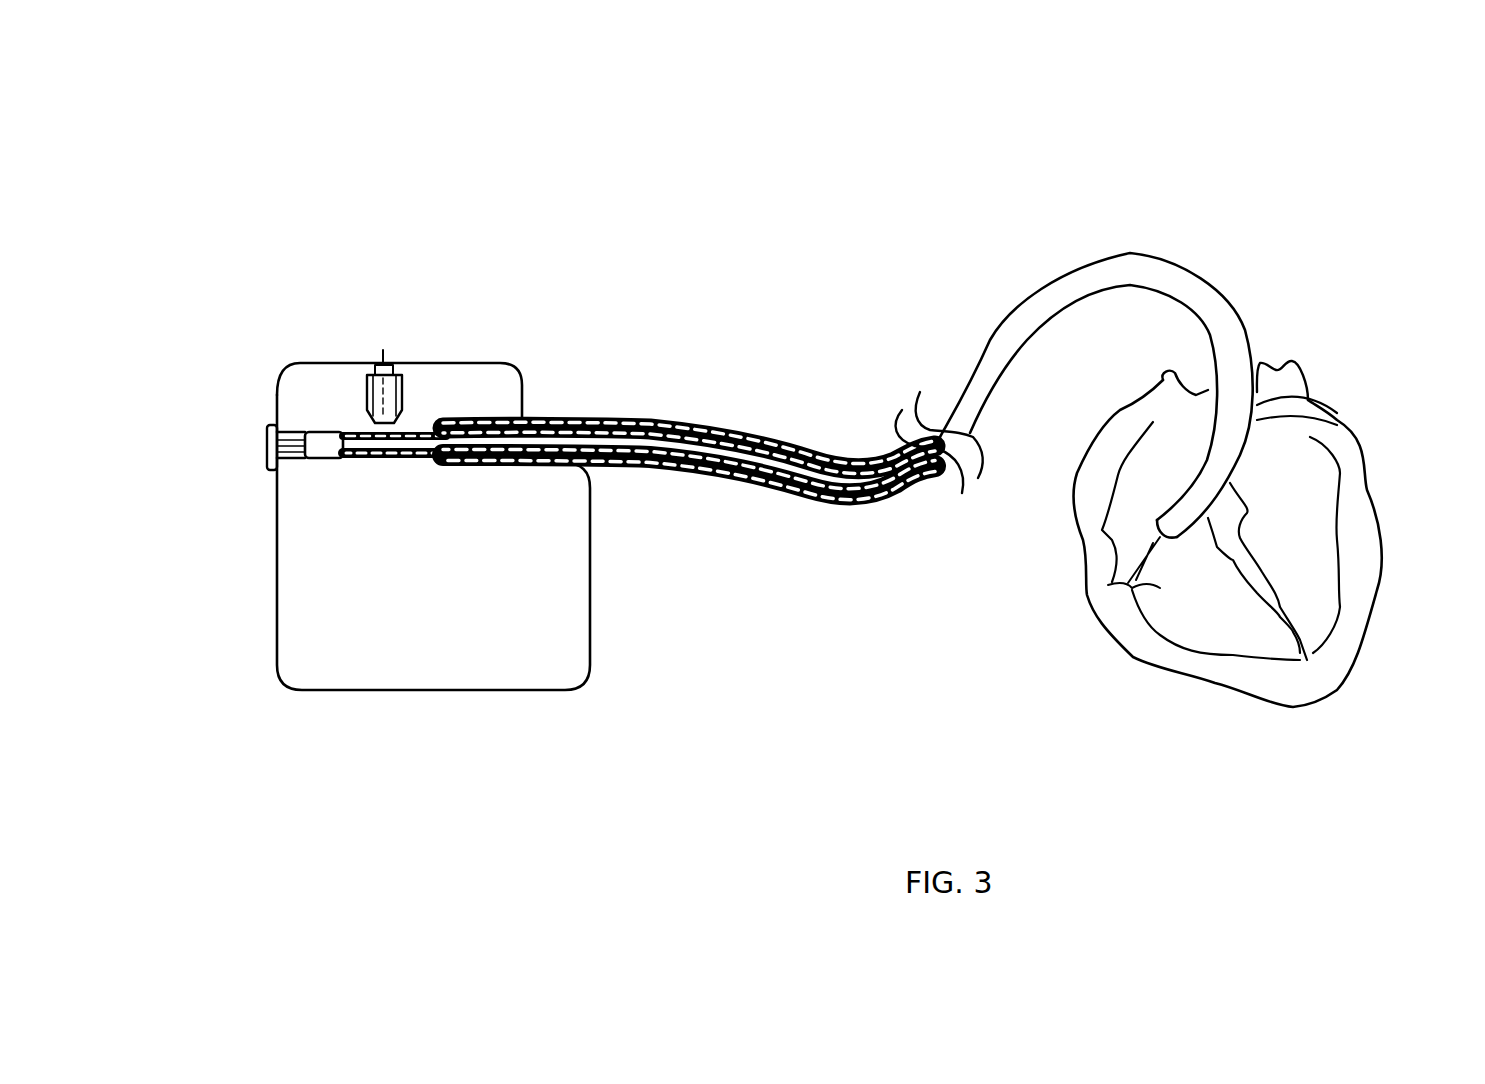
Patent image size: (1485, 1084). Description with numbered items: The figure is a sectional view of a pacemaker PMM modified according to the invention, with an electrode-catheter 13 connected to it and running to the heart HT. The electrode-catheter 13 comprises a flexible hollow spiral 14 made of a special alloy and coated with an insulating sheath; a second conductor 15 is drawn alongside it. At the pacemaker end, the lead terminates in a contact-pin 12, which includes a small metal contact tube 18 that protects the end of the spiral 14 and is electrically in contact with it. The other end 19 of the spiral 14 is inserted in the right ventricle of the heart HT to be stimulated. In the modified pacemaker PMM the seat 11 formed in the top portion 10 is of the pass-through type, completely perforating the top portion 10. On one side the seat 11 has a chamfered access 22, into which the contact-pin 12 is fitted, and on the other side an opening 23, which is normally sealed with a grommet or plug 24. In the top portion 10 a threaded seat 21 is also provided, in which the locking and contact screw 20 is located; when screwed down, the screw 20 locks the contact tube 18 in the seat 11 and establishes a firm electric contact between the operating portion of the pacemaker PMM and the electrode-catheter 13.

The top portion 10 is at (455, 387).
The seat 11 is at (317, 434).
The contact-pin 12 is at (689, 414).
The electrode-catheter 13 is at (1095, 265).
The flexible hollow spiral 14 is at (689, 349).
The lower conductor coil 15 is at (805, 489).
The contact tube 18 is at (360, 462).
The end of spiral 19 is at (1143, 557).
The locking and contact screw 20 is at (380, 362).
The threaded seat 21 is at (402, 402).
The chamfered access 22 is at (522, 420).
The opening 23 is at (277, 470).
The plug 24 is at (258, 442).
The heart HT is at (1360, 563).
The modified pacemaker PMM is at (555, 635).